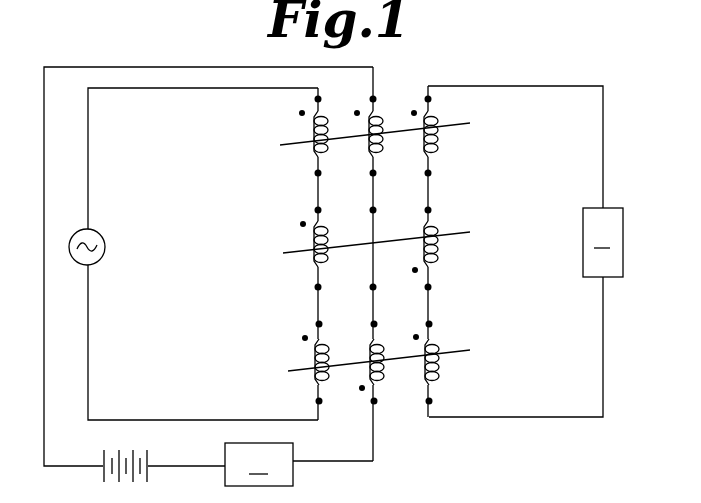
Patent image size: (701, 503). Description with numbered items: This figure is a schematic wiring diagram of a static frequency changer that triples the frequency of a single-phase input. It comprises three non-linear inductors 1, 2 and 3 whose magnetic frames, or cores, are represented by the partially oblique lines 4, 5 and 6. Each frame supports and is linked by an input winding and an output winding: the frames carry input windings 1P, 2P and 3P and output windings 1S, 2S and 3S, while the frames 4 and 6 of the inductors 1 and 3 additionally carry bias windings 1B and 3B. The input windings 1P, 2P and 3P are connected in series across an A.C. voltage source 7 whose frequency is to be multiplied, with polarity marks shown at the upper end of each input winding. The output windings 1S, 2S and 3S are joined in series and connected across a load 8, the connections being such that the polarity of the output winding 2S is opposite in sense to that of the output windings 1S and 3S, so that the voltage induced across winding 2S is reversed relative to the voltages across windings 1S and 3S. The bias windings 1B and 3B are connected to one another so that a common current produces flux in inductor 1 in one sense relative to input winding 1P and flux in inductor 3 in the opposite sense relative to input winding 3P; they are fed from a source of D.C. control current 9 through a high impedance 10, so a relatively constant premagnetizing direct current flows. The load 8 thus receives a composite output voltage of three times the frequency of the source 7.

The non-linear inductor 1 is at (335, 121).
The input winding 1P is at (316, 132).
The output winding 1S is at (437, 141).
The bias winding 1B is at (378, 115).
The non-linear inductor 2 is at (383, 228).
The input winding 2P is at (314, 258).
The output winding 2S is at (440, 255).
The non-linear inductor 3 is at (330, 354).
The input winding 3P is at (318, 378).
The output winding 3S is at (441, 375).
The bias winding 3B is at (362, 340).
The magnetic frame 4 is at (404, 133).
The magnetic frame 5 is at (350, 242).
The magnetic frame 6 is at (407, 358).
The A.C. voltage source 7 is at (103, 237).
The load 8 is at (603, 242).
The source of D.C. control current 9 is at (114, 474).
The high impedance 10 is at (259, 464).